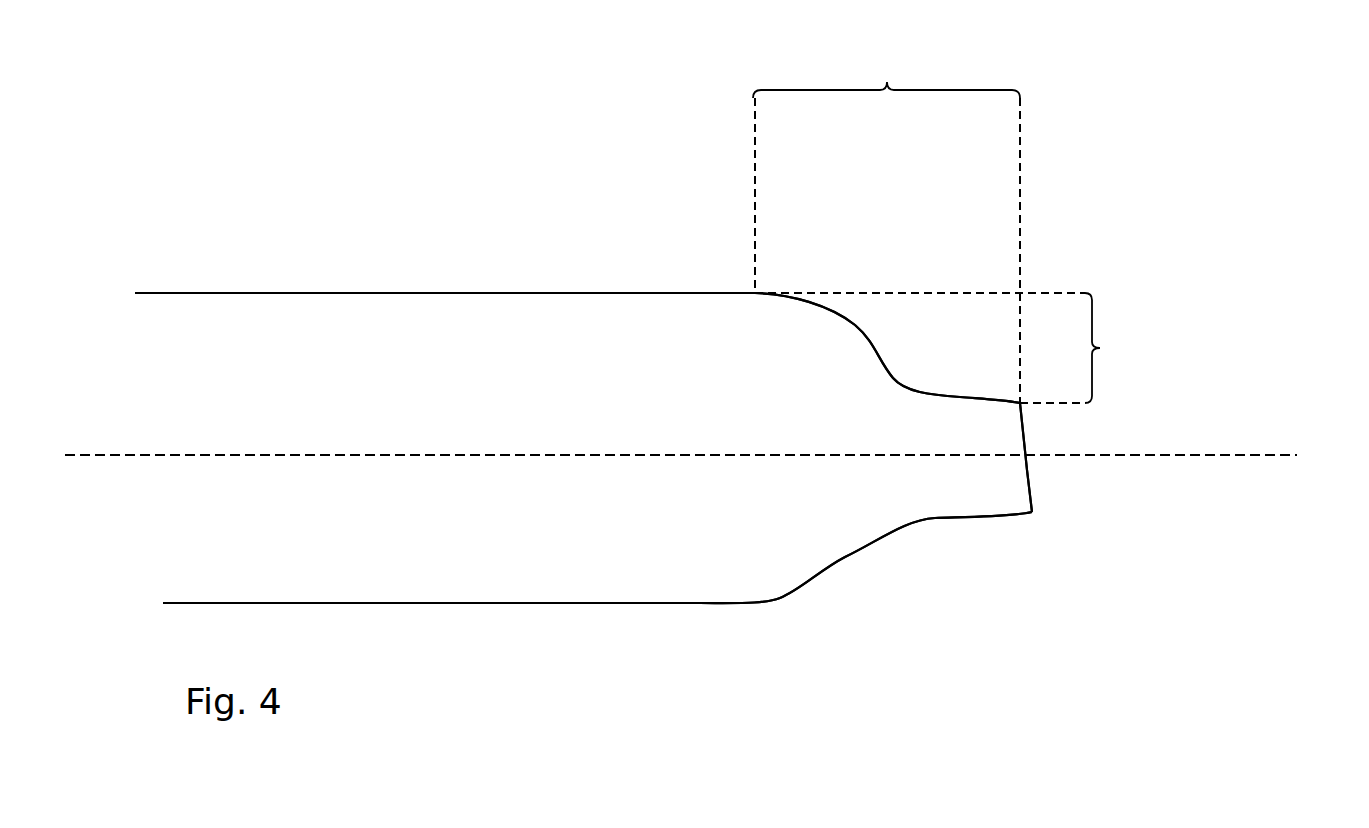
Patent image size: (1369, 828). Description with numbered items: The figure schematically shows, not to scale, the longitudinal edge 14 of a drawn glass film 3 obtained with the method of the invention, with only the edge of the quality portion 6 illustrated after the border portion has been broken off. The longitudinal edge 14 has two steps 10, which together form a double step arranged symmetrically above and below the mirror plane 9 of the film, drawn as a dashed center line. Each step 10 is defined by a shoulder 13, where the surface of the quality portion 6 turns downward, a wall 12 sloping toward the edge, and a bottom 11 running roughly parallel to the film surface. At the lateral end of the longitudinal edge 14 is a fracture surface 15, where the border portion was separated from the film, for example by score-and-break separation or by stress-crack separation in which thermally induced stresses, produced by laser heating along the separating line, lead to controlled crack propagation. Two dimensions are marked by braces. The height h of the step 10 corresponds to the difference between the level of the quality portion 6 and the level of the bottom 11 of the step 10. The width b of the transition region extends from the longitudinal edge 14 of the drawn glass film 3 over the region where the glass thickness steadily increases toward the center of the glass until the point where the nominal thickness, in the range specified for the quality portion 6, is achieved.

The drawn glass film 3 is at (535, 67).
The quality portion 6 is at (403, 251).
The mirror plane 9 is at (1203, 455).
The step 10 is at (897, 370).
The bottom 11 is at (990, 400).
The wall 12 is at (867, 348).
The shoulder 13 is at (790, 297).
The longitudinal edge 14 is at (1192, 322).
The fracture surface 15 is at (1027, 470).
The width of transition region b is at (886, 60).
The height of step h is at (1114, 348).